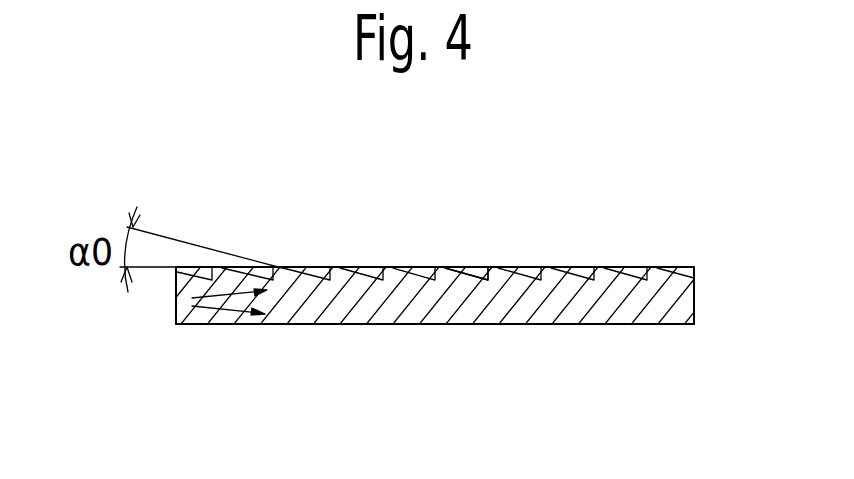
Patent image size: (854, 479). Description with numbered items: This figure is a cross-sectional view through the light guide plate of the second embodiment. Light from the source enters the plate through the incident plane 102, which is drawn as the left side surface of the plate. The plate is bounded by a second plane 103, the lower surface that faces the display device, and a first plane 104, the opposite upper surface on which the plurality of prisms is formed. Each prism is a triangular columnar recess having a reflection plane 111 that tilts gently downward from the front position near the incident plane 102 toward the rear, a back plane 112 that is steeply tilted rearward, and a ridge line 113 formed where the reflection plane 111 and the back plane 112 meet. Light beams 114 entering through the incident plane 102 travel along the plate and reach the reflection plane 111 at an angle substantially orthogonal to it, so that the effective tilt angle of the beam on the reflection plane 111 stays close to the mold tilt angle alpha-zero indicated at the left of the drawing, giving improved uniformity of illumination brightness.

The incident plane 102 is at (176, 320).
The second plane 103 is at (458, 324).
The first plane 104 is at (678, 267).
The reflection plane 111 is at (422, 267).
The back plane 112 is at (482, 267).
The ridge line 113 is at (550, 267).
The light beams 114 is at (236, 313).